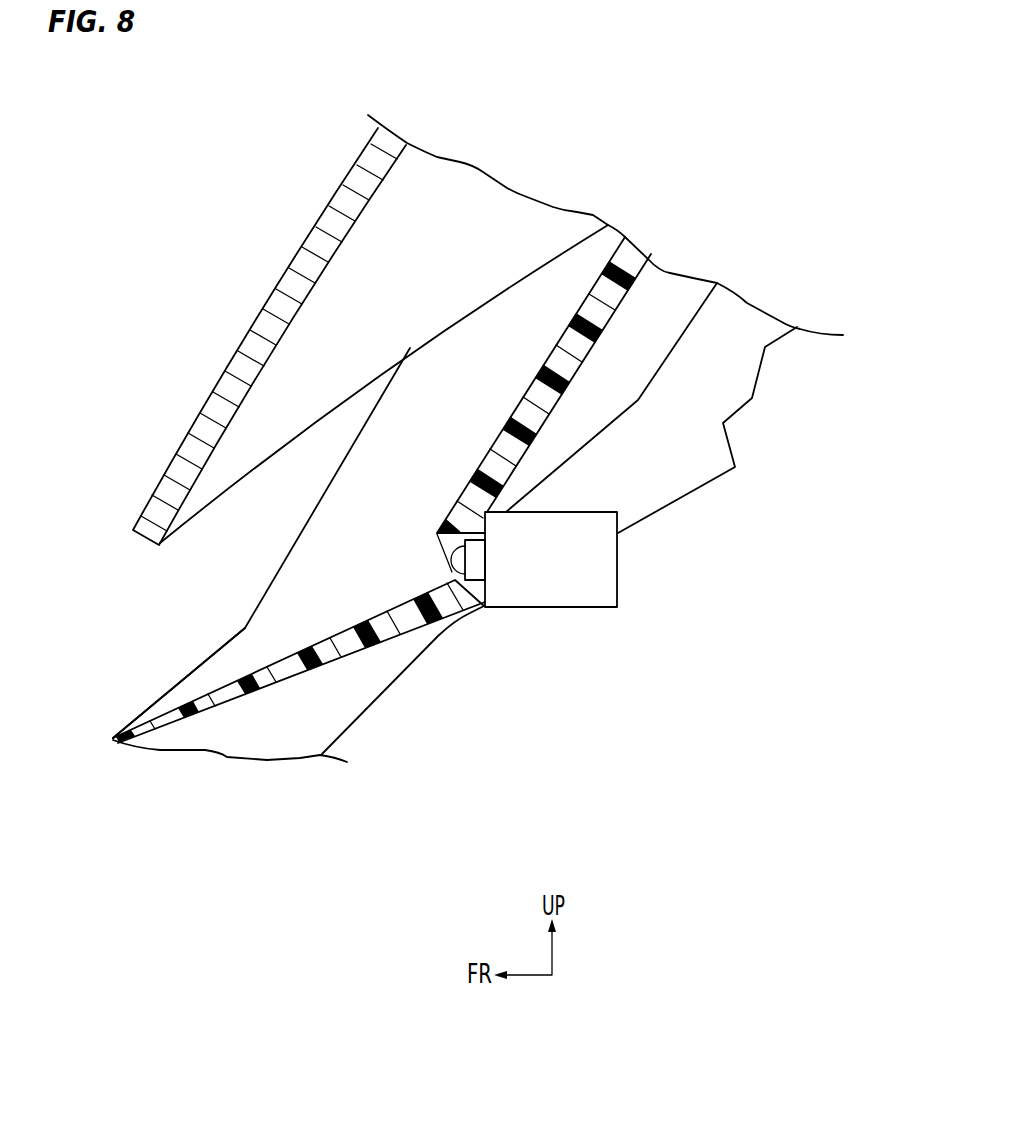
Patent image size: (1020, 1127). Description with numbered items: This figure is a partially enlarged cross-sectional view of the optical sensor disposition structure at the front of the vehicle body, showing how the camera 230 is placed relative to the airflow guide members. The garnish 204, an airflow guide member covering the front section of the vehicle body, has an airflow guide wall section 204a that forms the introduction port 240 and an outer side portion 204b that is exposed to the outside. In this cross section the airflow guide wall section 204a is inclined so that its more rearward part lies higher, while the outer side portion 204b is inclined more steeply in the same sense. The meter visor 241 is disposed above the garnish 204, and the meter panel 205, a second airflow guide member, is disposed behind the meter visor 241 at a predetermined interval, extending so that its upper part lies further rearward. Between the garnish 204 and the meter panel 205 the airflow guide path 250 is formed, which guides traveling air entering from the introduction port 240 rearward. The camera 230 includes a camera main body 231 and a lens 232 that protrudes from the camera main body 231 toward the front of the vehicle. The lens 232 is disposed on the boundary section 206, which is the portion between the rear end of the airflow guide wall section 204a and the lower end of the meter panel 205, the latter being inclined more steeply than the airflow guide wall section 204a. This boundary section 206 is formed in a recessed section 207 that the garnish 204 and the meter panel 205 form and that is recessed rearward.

The garnish 204 is at (277, 685).
The airflow guide wall section 204a is at (248, 670).
The outer side portion 204b is at (253, 605).
The meter panel 205 is at (534, 378).
The boundary section 206 is at (448, 540).
The recessed section 207 is at (448, 562).
The camera 230 is at (551, 640).
The camera main body 231 is at (585, 598).
The lens 232 is at (458, 568).
The introduction port 240 is at (186, 686).
The meter visor 241 is at (265, 312).
The airflow guide path 250 is at (233, 538).